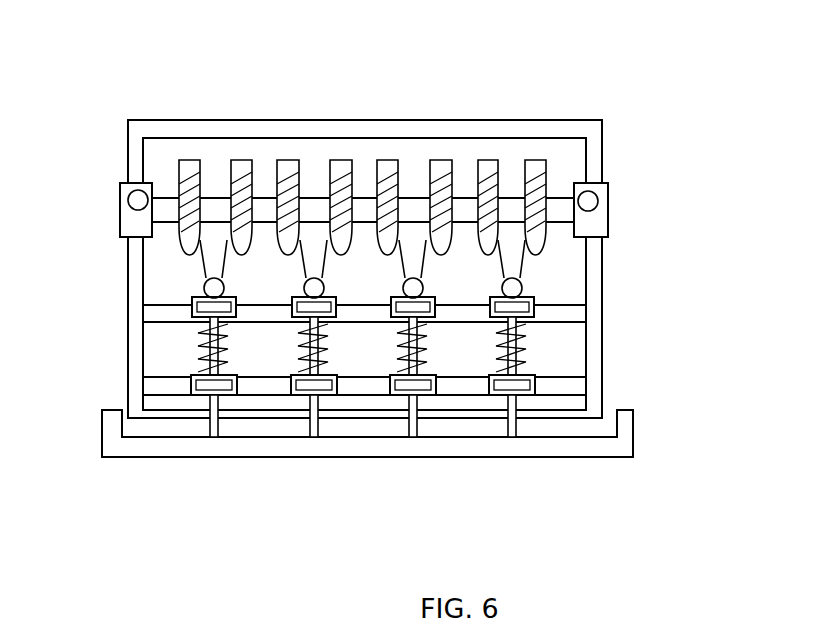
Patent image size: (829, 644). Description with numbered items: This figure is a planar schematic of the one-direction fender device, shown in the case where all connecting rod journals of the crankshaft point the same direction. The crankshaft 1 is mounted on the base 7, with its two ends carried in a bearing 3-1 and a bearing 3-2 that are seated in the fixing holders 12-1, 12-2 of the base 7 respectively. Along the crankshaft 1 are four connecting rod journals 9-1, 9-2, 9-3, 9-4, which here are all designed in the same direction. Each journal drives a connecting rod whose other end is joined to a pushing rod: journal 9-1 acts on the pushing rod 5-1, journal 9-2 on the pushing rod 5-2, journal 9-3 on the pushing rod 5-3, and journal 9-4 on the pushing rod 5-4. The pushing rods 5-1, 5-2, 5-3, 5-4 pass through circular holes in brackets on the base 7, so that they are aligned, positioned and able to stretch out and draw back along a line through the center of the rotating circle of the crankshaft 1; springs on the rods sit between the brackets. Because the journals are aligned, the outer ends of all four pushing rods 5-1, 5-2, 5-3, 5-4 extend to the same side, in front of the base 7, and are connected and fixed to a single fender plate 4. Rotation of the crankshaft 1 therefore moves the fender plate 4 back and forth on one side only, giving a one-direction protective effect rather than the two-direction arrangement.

The crankshaft 1 is at (263, 170).
The base 7 is at (602, 120).
The fixing holder 12-1 is at (122, 183).
The fixing holder 12-2 is at (606, 183).
The bearing 3-1 is at (130, 210).
The bearing 3-2 is at (586, 203).
The connecting rod journal 9-1 is at (214, 236).
The connecting rod journal 9-2 is at (509, 236).
The connecting rod journal 9-3 is at (304, 236).
The connecting rod journal 9-4 is at (408, 236).
The pushing rod 5-1 is at (218, 423).
The pushing rod 5-2 is at (516, 423).
The pushing rod 5-3 is at (318, 423).
The pushing rod 5-4 is at (417, 423).
The fender plate 4 is at (628, 433).